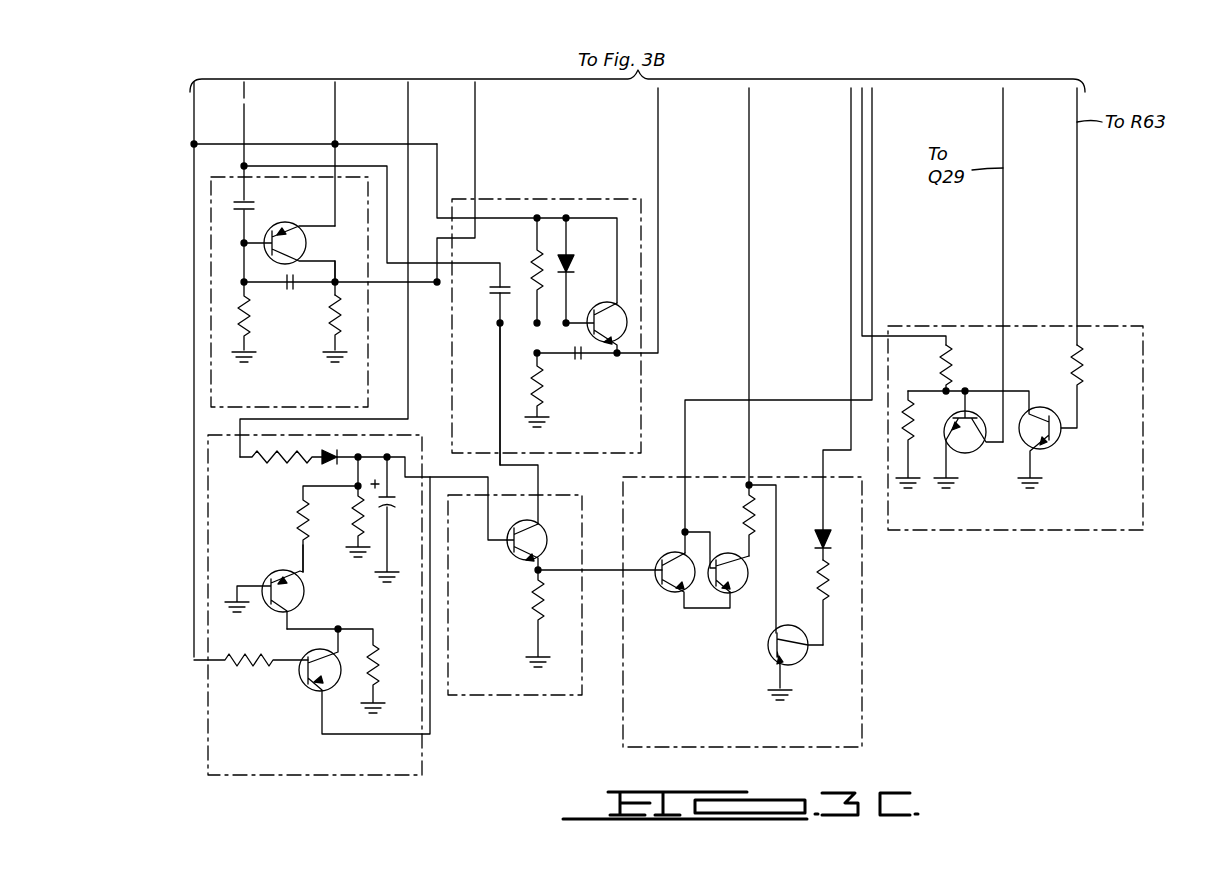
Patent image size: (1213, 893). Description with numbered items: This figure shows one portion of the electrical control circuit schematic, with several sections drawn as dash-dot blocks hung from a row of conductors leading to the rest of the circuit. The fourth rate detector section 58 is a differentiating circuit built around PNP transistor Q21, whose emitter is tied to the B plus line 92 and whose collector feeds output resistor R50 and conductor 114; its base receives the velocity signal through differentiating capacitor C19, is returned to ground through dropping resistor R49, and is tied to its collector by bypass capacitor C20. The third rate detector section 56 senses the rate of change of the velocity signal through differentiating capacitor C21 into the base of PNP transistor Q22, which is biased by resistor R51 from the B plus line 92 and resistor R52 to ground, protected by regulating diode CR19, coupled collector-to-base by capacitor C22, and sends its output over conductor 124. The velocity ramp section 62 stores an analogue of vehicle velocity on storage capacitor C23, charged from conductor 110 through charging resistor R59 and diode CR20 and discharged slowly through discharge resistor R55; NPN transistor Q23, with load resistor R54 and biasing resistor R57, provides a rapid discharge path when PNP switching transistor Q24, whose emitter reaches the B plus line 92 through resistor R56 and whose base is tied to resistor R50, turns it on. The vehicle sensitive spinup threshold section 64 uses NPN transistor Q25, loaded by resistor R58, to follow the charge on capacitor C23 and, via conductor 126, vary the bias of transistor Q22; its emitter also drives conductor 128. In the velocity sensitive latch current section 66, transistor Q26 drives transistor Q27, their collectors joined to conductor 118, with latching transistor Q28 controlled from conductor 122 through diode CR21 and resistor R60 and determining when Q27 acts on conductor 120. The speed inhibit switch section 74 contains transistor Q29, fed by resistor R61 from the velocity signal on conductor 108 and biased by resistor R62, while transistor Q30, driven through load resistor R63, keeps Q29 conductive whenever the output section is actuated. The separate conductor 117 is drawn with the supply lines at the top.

The B plus line 92 is at (194, 118).
The line 117' 117 is at (244, 118).
The conductor 110 is at (408, 118).
The conductor 114 is at (475, 118).
The conductor 124 is at (658, 118).
The conductor 120 is at (749, 118).
The conductor 122 is at (851, 225).
The conductor 108 is at (862, 165).
The conductor 118 is at (872, 118).
The fourth rate detector section 58 is at (211, 383).
The differentiating capacitor C19 is at (254, 206).
The PNP transistor Q21 is at (290, 235).
The bypass capacitor C20 is at (289, 286).
The dropping resistor R49 is at (244, 319).
The output resistor R50 is at (322, 335).
The velocity ramp section 62 is at (300, 785).
The charging resistor R59 is at (270, 469).
The diode CR20 is at (330, 450).
The load resistor R54 is at (298, 520).
The discharge resistor R55 is at (355, 510).
The storage capacitor C23 is at (405, 508).
The NPN transistor Q23 is at (283, 572).
The biasing resistor R57 is at (380, 654).
The resistor R56 is at (260, 670).
The PNP switching transistor Q24 is at (307, 703).
The third rate detector section 56 is at (641, 373).
The resistor R51 is at (533, 253).
The regulating diode CR19 is at (598, 252).
The PNP transistor Q22 is at (600, 306).
The differentiating capacitor C21 is at (488, 306).
The conductor 126 is at (500, 390).
The coupling capacitor C22 is at (576, 360).
The resistor R52 is at (546, 402).
The vehicle sensitive spinup threshold section 64 is at (476, 694).
The NPN transistor Q25 is at (507, 566).
The load resistor R58 is at (530, 602).
The conductor 128 is at (593, 568).
The velocity sensitive latch current section 66 is at (862, 687).
The amplifying NPN transistor Q26 is at (670, 606).
The NPN transistor Q27 is at (745, 606).
The latching NPN transistor Q28 is at (770, 659).
The diode CR21 is at (832, 544).
The resistor R60 is at (836, 586).
The speed inhibit switch section 74 is at (1047, 530).
The resistor R61 is at (952, 343).
The biasing resistor R62 is at (916, 398).
The load resistor R63 is at (1083, 380).
The NPN transistor Q29 is at (976, 457).
The NPN transistor Q30 is at (1052, 452).